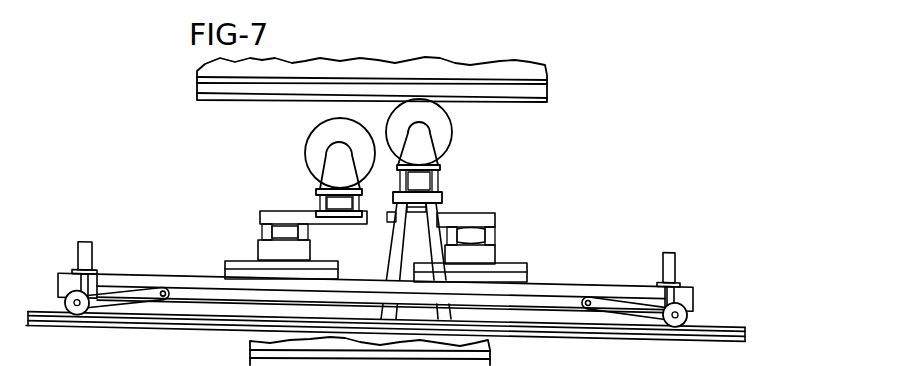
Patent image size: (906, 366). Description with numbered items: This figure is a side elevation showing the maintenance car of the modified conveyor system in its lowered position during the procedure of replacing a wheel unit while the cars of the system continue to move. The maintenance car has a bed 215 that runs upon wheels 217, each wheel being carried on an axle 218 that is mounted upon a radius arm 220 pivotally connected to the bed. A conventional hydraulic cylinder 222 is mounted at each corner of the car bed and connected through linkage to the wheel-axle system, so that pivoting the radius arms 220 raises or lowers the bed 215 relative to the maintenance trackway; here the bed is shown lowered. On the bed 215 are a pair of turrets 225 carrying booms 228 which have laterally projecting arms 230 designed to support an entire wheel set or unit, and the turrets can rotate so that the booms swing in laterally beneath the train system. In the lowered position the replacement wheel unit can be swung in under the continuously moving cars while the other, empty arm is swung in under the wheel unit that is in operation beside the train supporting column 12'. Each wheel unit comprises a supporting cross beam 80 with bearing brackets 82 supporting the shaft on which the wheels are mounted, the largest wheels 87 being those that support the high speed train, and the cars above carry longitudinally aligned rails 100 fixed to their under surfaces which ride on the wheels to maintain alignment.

The rail 100 is at (226, 91).
The largest wheels 87 is at (308, 140).
The bearing bracket 82 is at (430, 147).
The supporting cross beam 80 is at (320, 197).
The train supporting column 12' is at (446, 244).
The laterally projecting arm 230 is at (330, 221).
The boom 228 is at (300, 225).
The turret 225 is at (227, 267).
The bed 215 is at (563, 288).
The hydraulic cylinder 222 is at (92, 250).
The radius arm 220 is at (115, 300).
The axle 218 is at (67, 308).
The wheel 217 is at (76, 307).